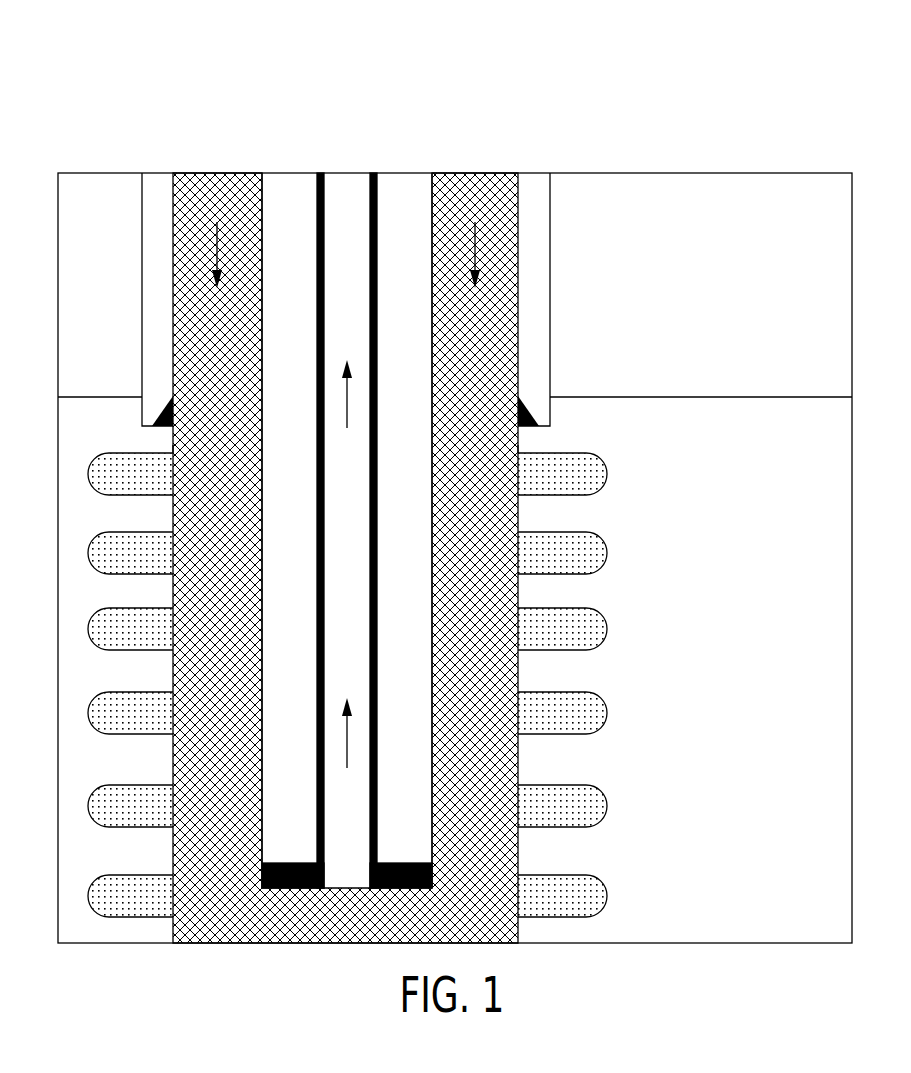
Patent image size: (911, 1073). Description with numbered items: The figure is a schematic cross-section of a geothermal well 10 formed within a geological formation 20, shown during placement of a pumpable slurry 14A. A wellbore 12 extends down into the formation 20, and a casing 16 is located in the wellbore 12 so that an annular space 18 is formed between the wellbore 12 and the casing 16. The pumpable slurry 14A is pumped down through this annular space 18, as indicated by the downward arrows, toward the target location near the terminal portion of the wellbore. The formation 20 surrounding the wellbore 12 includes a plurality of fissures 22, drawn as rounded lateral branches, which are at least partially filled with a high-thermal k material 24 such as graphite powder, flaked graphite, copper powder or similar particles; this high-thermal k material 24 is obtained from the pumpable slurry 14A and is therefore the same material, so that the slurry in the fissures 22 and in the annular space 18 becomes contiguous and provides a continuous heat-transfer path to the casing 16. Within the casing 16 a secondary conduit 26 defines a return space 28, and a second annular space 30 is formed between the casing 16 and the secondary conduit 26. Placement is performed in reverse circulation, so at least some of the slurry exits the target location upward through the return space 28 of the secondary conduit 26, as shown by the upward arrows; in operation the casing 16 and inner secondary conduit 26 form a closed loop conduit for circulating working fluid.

The geothermal well 10 is at (596, 97).
The wellbore 12 is at (536, 209).
The pumpable slurry 14A is at (183, 185).
The casing 16 is at (262, 187).
The annular space 18 is at (217, 152).
The geological formation 20 is at (832, 573).
The fissures 22 is at (92, 443).
The high-thermal k material 24 is at (105, 482).
The secondary conduit 26 is at (323, 173).
The return space 28 is at (353, 152).
The second annular space 30 is at (300, 152).